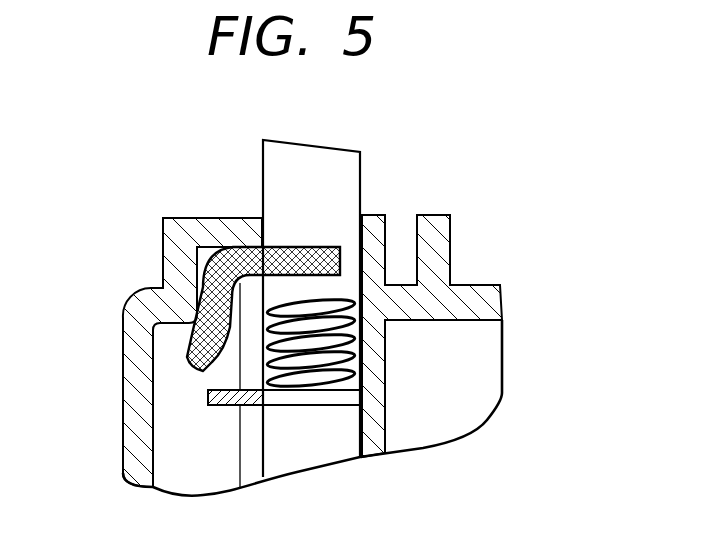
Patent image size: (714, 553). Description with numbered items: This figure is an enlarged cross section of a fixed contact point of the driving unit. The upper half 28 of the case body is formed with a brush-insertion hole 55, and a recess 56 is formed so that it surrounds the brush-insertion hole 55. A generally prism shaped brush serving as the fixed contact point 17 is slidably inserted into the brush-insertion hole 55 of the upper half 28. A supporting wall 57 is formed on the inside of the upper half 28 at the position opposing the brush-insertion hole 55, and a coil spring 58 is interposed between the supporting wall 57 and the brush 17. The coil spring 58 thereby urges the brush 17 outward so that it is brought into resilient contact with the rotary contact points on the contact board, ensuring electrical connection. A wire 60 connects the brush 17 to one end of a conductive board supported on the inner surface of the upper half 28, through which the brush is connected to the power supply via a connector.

The fixed contact point 17 is at (308, 148).
The upper half 28 is at (123, 364).
The brush-insertion hole 55 is at (263, 230).
The recess 56 is at (416, 242).
The supporting wall 57 is at (322, 408).
The coil spring 58 is at (360, 342).
The wire 60 is at (215, 263).